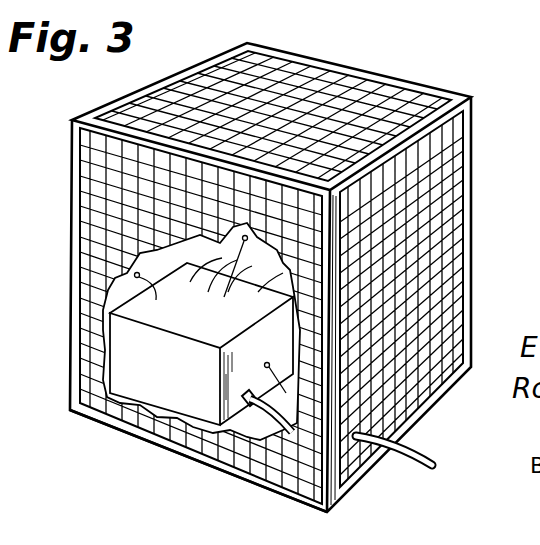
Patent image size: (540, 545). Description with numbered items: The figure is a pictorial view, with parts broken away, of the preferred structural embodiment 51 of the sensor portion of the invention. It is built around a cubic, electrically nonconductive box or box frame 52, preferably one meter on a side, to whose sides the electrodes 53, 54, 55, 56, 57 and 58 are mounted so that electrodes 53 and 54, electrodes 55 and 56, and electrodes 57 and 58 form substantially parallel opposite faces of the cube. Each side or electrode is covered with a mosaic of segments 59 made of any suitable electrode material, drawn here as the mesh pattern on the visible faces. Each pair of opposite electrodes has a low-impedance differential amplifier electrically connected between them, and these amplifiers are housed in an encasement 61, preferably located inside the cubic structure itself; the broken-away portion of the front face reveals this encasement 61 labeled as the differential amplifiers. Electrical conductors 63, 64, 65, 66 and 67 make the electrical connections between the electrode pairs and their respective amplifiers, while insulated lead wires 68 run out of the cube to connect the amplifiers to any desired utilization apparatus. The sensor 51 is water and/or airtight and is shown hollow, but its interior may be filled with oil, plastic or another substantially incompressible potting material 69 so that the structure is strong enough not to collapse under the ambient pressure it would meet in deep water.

The preferred structural embodiment of the sensor portion 51 is at (163, 71).
The box frame 52 is at (450, 62).
The electrode 53 is at (290, 80).
The electrode 54 is at (253, 483).
The electrode 55 is at (69, 257).
The electrode 56 is at (423, 257).
The electrode 57 is at (110, 168).
The electrode 58 is at (473, 173).
The mosaic of segments 59 is at (427, 223).
The encasement 61 is at (168, 320).
The electrical conductor 63 is at (198, 281).
The electrical conductor 64 is at (214, 290).
The electrical conductor 65 is at (235, 296).
The electrical conductor 66 is at (266, 293).
The electrical conductor 67 is at (291, 386).
The insulated lead wires 68 is at (447, 433).
The potting material 69 is at (166, 267).